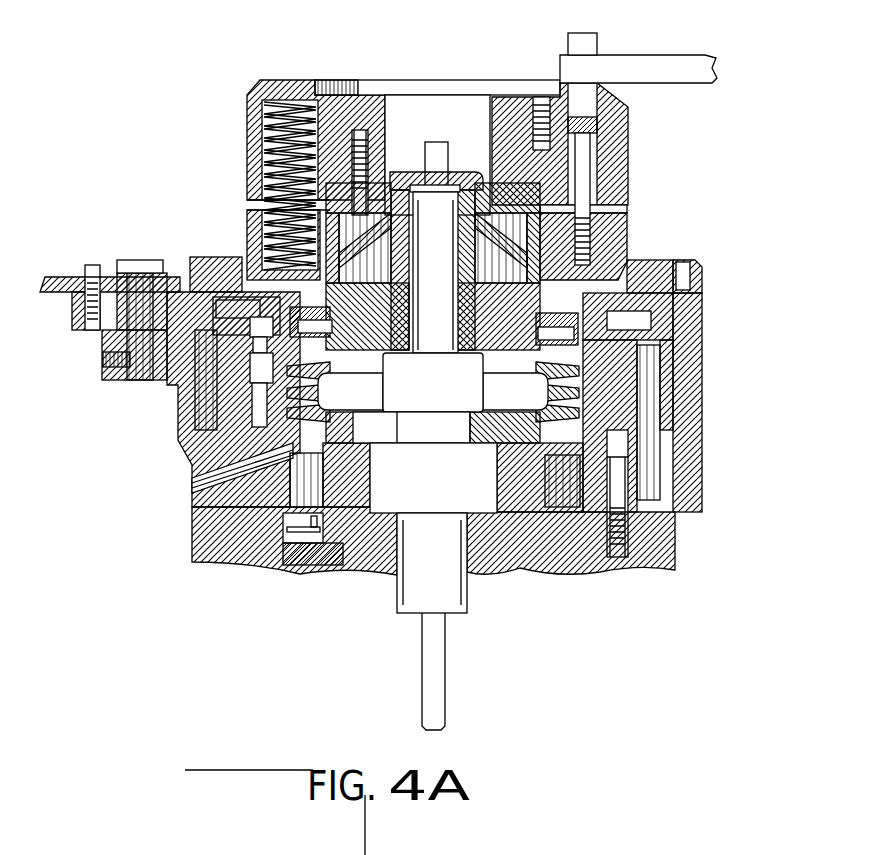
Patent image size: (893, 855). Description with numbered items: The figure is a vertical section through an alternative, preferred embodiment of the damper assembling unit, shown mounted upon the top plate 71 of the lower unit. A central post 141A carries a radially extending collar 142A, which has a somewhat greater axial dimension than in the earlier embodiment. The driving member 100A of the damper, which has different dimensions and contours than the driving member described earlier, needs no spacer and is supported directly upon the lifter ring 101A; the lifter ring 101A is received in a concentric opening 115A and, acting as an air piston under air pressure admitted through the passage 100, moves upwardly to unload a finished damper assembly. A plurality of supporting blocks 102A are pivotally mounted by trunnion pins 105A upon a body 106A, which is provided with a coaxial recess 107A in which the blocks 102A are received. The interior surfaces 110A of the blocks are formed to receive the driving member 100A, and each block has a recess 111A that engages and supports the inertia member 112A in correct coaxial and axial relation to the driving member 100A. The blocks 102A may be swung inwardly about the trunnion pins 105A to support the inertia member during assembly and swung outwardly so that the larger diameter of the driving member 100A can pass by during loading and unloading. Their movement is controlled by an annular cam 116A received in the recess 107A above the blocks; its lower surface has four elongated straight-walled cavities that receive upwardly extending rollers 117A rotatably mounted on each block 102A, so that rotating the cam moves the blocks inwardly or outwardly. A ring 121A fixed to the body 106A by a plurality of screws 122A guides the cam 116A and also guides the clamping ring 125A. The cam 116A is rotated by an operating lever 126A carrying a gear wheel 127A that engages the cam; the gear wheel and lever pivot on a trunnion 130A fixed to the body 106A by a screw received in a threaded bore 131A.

The top plate 71 is at (193, 541).
The passage 100 is at (283, 531).
The driving member 100A is at (383, 372).
The lifter ring 101A is at (356, 505).
The supporting blocks 102A is at (277, 427).
The trunnion pins 105A is at (660, 477).
The body 106A is at (697, 423).
The coaxial recess 107A is at (195, 393).
The interior surfaces 110A is at (320, 391).
The recess 111A is at (434, 326).
The inertia member 112A is at (335, 303).
The concentric opening 115A is at (292, 479).
The annular cam 116A is at (257, 317).
The rollers 117A is at (253, 370).
The ring 121A is at (213, 250).
The screws 122A is at (683, 265).
The clamping ring 125A is at (618, 229).
The operating lever 126A is at (65, 273).
The gear wheel 127A is at (72, 320).
The trunnion 130A is at (150, 250).
The threaded bore 131A is at (105, 357).
The post 141A is at (453, 432).
The radially extending collar 142A is at (458, 487).